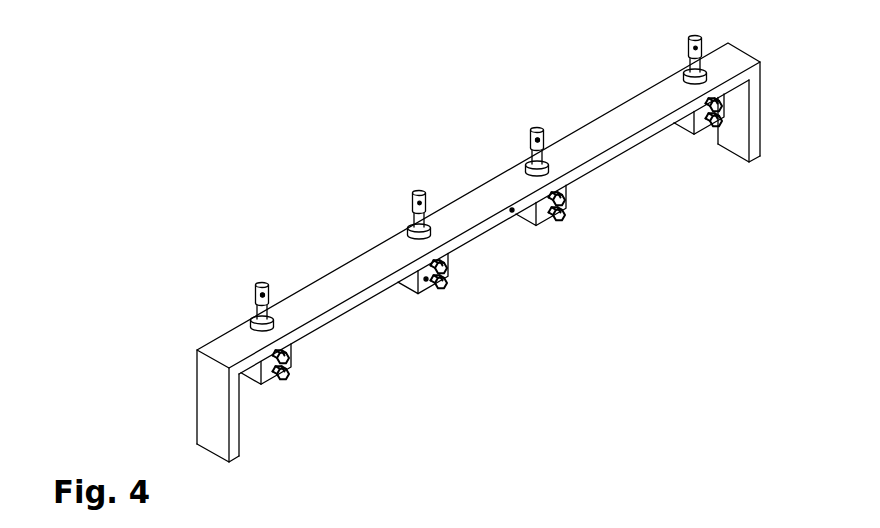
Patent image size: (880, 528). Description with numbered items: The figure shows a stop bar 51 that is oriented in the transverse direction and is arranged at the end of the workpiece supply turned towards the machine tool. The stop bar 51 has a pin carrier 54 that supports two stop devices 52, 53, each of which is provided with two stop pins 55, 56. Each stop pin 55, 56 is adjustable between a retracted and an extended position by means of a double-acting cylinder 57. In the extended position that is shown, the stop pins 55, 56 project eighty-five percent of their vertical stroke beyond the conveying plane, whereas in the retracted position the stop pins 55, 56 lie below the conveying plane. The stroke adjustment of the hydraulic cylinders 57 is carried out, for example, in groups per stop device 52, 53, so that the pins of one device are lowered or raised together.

The stop bar 51 is at (351, 347).
The stop device 52 is at (277, 277).
The stop device 53 is at (517, 125).
The pin carrier 54 is at (512, 210).
The stop pin 55 is at (262, 293).
The stop pin 56 is at (538, 139).
The double-acting cylinder 57 is at (426, 279).